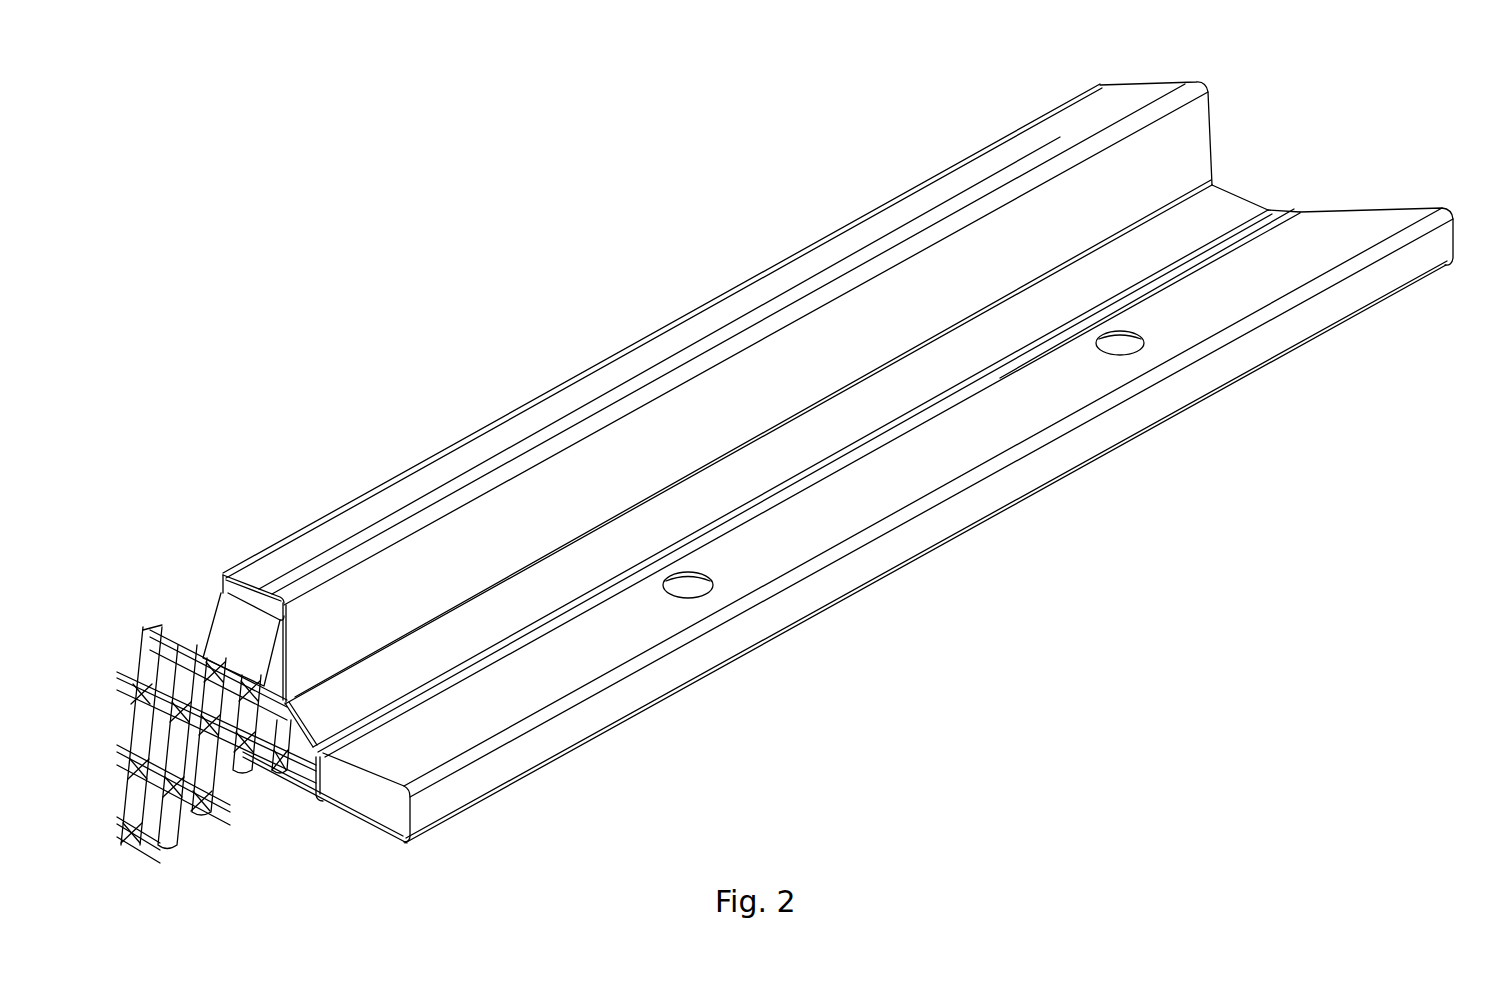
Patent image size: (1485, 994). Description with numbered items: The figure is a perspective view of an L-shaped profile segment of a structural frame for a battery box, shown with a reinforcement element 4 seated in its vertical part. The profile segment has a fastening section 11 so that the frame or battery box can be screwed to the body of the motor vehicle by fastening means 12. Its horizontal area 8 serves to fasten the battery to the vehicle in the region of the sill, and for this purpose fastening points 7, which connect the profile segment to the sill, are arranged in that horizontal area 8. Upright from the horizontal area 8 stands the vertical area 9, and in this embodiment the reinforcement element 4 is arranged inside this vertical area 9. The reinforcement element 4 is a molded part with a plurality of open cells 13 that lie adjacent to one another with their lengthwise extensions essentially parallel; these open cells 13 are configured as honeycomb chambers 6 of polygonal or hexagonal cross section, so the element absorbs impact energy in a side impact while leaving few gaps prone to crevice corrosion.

The reinforcement element 4 is at (167, 813).
The honeycomb chambers 6 is at (272, 652).
The fastening points 7 is at (1138, 351).
The horizontal area 8 is at (1348, 230).
The vertical area 9 is at (1205, 143).
The fastening section 11 is at (920, 467).
The fastening means 12 is at (705, 593).
The open cells 13 is at (240, 718).